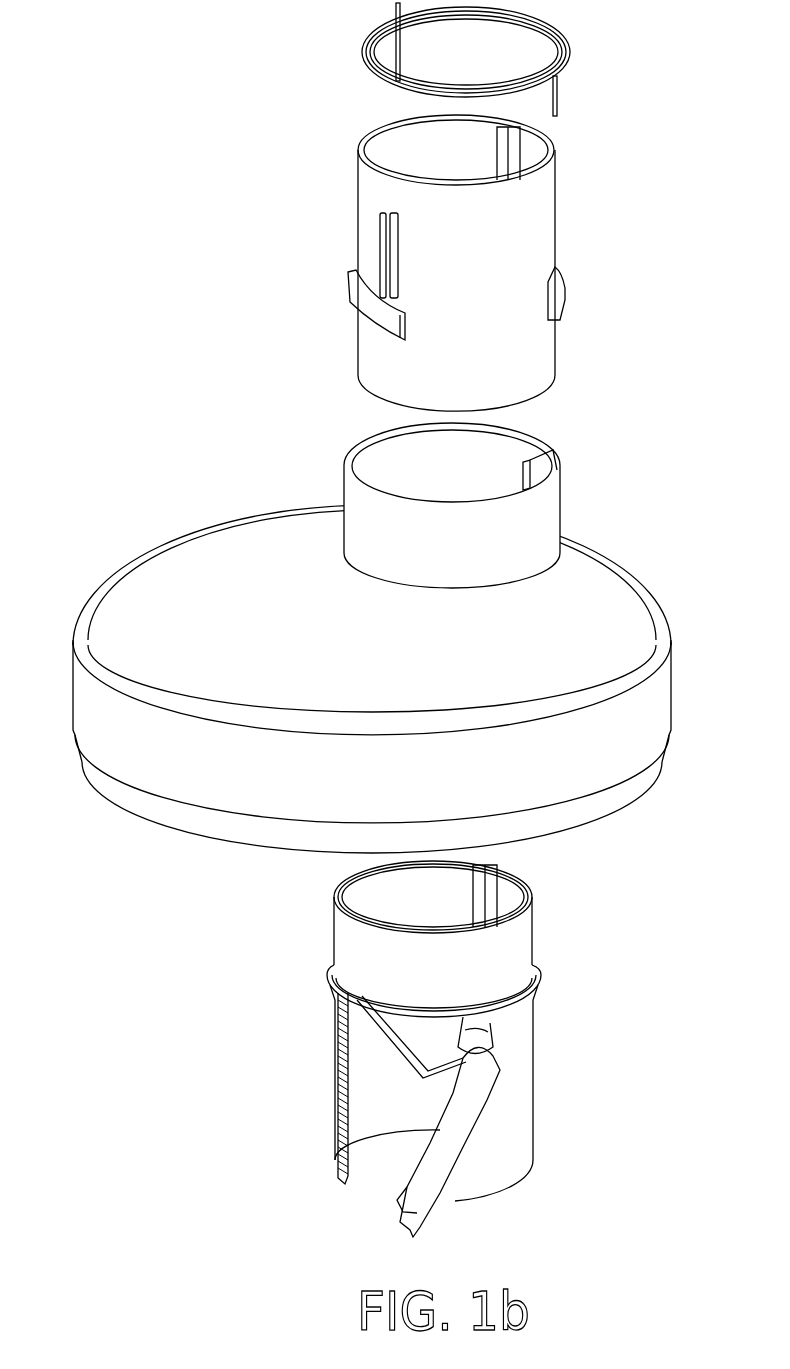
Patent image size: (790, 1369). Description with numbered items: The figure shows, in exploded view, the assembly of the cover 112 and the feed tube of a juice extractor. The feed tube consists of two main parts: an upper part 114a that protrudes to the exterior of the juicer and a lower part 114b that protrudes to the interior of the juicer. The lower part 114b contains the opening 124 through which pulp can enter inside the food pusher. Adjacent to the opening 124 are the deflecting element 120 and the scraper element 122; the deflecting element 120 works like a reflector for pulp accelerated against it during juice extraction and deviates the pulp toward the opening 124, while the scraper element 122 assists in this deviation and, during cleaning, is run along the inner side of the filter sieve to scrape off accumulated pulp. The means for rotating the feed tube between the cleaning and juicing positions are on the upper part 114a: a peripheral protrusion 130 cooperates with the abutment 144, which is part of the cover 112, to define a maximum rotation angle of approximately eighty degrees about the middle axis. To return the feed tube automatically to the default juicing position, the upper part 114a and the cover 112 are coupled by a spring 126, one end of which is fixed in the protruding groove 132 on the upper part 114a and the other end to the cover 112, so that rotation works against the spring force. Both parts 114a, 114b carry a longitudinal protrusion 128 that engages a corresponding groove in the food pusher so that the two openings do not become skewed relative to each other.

The cover 112 is at (178, 563).
The upper part of the feed tube 114a is at (555, 218).
The lower part of the feed tube 114b is at (532, 955).
The deflecting element 120 is at (455, 1040).
The scraper element 122 is at (452, 1130).
The opening 124 is at (378, 1105).
The spring 126 is at (572, 50).
The longitudinal protrusion 128 is at (510, 147).
The peripheral protrusion 130 is at (372, 318).
The protruding groove 132 is at (385, 262).
The abutment 144 is at (557, 463).